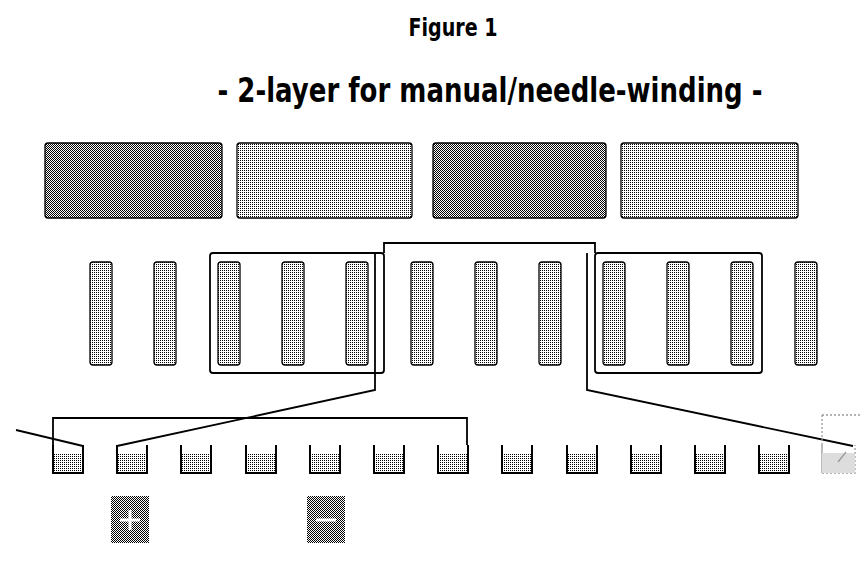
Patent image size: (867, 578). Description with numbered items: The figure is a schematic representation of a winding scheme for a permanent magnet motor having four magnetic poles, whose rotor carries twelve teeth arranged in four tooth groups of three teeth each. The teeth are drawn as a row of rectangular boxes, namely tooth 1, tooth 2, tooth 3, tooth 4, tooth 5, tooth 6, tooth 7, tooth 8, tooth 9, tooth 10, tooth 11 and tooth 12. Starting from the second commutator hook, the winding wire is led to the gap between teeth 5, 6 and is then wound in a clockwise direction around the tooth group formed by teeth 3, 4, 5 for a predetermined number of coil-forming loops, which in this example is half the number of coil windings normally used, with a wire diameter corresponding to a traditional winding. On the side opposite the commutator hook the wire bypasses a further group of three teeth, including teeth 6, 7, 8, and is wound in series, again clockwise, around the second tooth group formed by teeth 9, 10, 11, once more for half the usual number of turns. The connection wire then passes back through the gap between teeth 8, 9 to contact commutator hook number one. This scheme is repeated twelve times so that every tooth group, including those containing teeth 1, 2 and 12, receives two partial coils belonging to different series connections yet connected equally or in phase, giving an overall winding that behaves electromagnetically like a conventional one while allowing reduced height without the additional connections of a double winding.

The tooth 1 is at (82, 367).
The tooth 2 is at (146, 367).
The tooth 3 is at (210, 367).
The tooth 4 is at (275, 367).
The tooth 5 is at (339, 367).
The tooth 6 is at (403, 367).
The tooth 7 is at (467, 367).
The tooth 8 is at (531, 367).
The tooth 9 is at (596, 367).
The tooth 10 is at (660, 367).
The tooth 11 is at (724, 367).
The tooth 12 is at (788, 367).